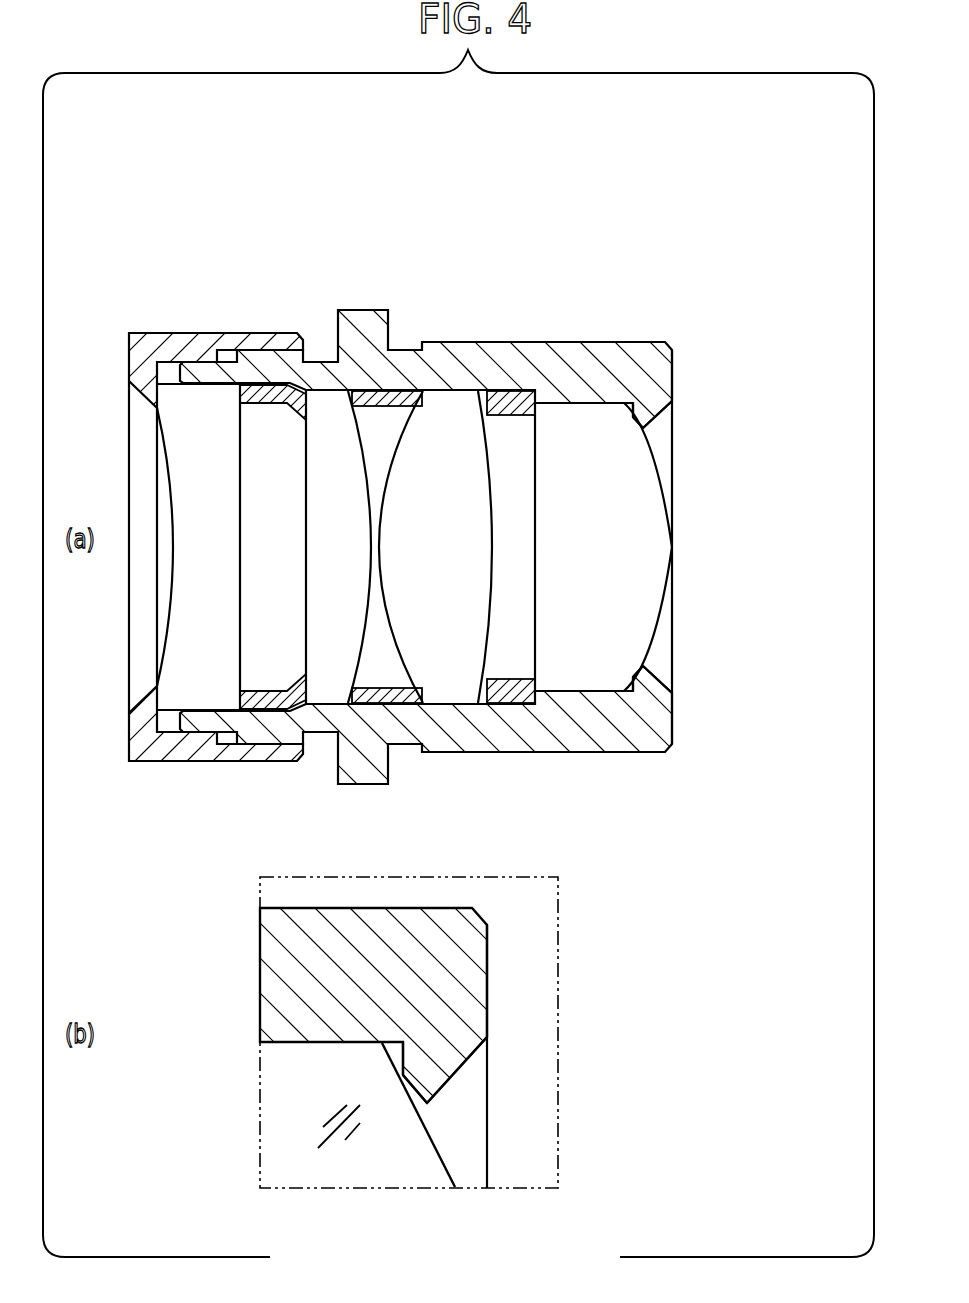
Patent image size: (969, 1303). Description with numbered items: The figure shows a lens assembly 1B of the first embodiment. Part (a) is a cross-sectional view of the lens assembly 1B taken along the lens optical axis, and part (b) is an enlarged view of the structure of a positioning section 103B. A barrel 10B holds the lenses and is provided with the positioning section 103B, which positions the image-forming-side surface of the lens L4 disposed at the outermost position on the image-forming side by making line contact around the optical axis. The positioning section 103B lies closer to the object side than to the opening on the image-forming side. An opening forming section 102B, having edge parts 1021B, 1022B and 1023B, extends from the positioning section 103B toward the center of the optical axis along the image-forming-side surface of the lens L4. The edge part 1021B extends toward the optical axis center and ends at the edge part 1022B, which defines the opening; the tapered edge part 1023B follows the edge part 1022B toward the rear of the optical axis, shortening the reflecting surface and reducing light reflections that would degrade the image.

The lens assembly 1B is at (327, 220).
The barrel 10B is at (402, 358).
The lens L4 is at (583, 447).
The opening forming section 102B is at (793, 380).
The edge part 1021B is at (633, 418).
The edge part 1022B is at (655, 443).
The tapered edge part 1023B is at (673, 423).
The positioning section 103B is at (633, 418).